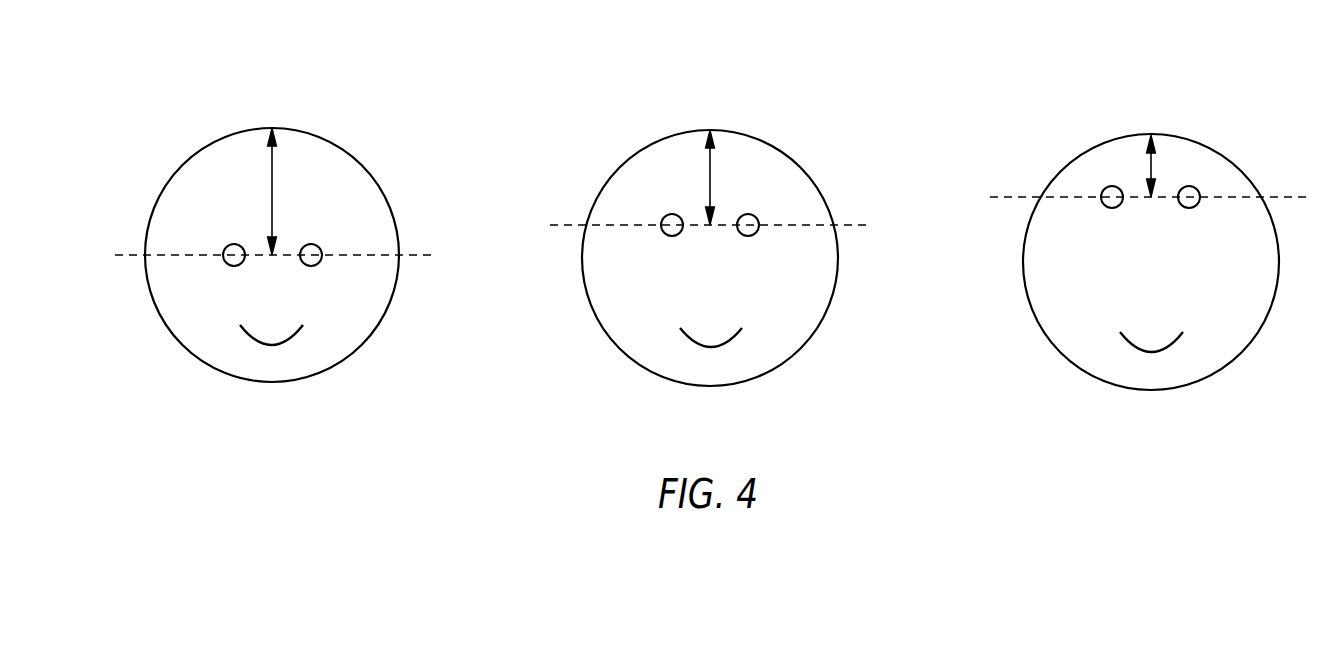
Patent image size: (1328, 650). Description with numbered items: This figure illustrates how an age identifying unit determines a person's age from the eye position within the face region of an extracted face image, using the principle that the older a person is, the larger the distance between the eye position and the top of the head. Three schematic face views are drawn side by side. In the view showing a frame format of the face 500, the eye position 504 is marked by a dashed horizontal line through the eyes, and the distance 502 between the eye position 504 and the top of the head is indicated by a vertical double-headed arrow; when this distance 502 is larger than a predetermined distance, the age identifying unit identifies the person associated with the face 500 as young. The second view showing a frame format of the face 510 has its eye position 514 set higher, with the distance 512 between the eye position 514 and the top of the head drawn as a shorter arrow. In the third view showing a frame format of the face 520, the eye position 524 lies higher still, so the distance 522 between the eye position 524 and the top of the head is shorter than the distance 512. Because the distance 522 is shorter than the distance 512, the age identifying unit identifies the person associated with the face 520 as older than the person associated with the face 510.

The view showing a frame format of the face 500 is at (272, 214).
The distance 502 is at (273, 192).
The eye position 504 is at (250, 256).
The view showing a frame format of the face 510 is at (710, 215).
The distance 512 is at (710, 177).
The eye position 514 is at (686, 226).
The view showing a frame format of the face 520 is at (1151, 219).
The distance 522 is at (1152, 165).
The eye position 524 is at (1127, 198).